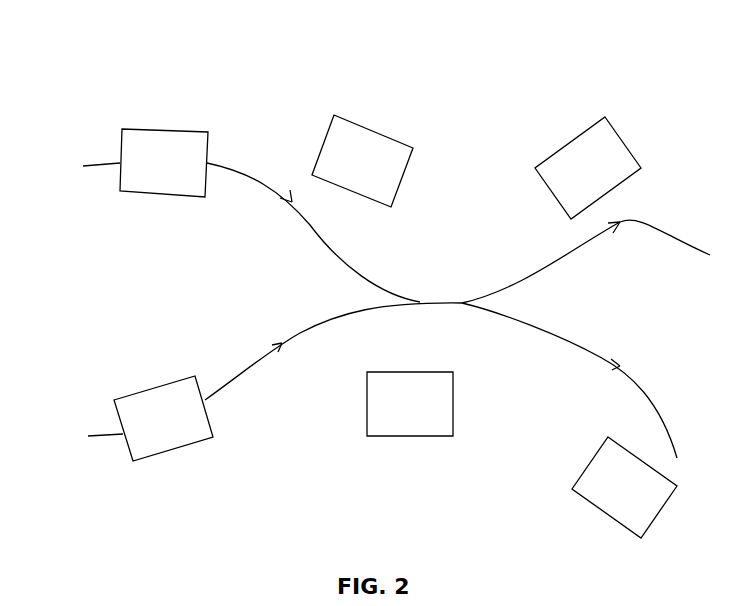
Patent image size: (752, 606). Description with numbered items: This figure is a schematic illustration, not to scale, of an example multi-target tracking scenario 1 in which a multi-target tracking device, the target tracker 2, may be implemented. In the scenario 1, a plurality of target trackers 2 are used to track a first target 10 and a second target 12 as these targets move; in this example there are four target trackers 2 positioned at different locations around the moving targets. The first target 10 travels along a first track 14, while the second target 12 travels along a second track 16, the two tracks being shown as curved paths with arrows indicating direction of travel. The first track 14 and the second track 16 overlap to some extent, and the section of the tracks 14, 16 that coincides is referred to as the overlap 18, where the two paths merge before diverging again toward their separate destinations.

The multi-target tracking scenario 1 is at (611, 53).
The target tracker 2 is at (364, 171).
The first target 10 is at (175, 165).
The second target 12 is at (174, 427).
The first track 14 is at (107, 165).
The second track 16 is at (107, 436).
The overlap 18 is at (422, 302).